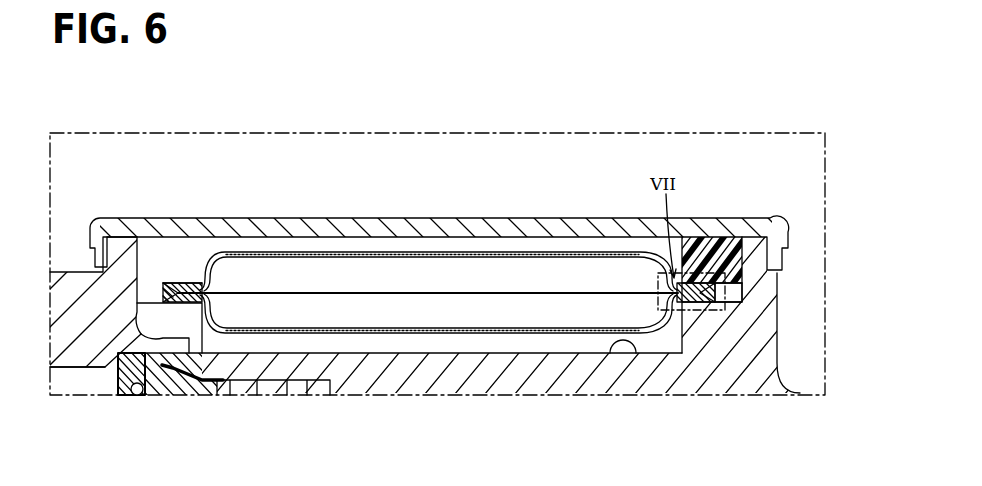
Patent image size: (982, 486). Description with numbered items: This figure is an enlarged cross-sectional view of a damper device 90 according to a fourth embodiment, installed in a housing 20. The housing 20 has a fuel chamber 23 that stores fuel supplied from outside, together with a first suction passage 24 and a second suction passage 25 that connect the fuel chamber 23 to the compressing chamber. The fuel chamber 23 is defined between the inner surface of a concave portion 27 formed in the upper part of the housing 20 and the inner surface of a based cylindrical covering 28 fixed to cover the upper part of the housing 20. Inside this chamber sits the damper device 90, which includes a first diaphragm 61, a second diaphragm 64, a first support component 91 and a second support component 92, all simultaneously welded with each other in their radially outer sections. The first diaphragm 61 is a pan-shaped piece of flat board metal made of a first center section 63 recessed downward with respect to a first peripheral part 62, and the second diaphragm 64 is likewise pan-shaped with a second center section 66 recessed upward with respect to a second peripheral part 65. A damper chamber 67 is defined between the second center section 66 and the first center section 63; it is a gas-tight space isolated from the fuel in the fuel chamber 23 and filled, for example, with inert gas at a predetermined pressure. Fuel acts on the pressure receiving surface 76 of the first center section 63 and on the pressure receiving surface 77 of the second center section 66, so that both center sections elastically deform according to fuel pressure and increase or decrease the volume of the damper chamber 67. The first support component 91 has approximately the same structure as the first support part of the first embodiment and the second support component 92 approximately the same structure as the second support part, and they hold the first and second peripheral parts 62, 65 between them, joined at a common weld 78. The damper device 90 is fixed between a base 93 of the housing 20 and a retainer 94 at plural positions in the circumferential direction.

The housing 20 is at (763, 367).
The fuel chamber 23 is at (625, 245).
The first suction passage 24 is at (80, 340).
The second suction passage 25 is at (82, 383).
The concave portion 27 is at (612, 350).
The based cylindrical covering 28 is at (98, 225).
The first diaphragm 61 is at (470, 346).
The first peripheral part 62 is at (192, 343).
The first center section 63 is at (507, 334).
The second diaphragm 64 is at (472, 241).
The second peripheral part 65 is at (187, 293).
The second center section 66 is at (507, 252).
The damper chamber 67 is at (438, 277).
The pressure receiving surface 76 is at (408, 334).
The pressure receiving surface 77 is at (399, 250).
The weld 78 is at (163, 293).
The damper device 90 is at (153, 288).
The first support component 91 is at (172, 338).
The second support component 92 is at (182, 290).
The base 93 is at (163, 320).
The retainer 94 is at (710, 247).